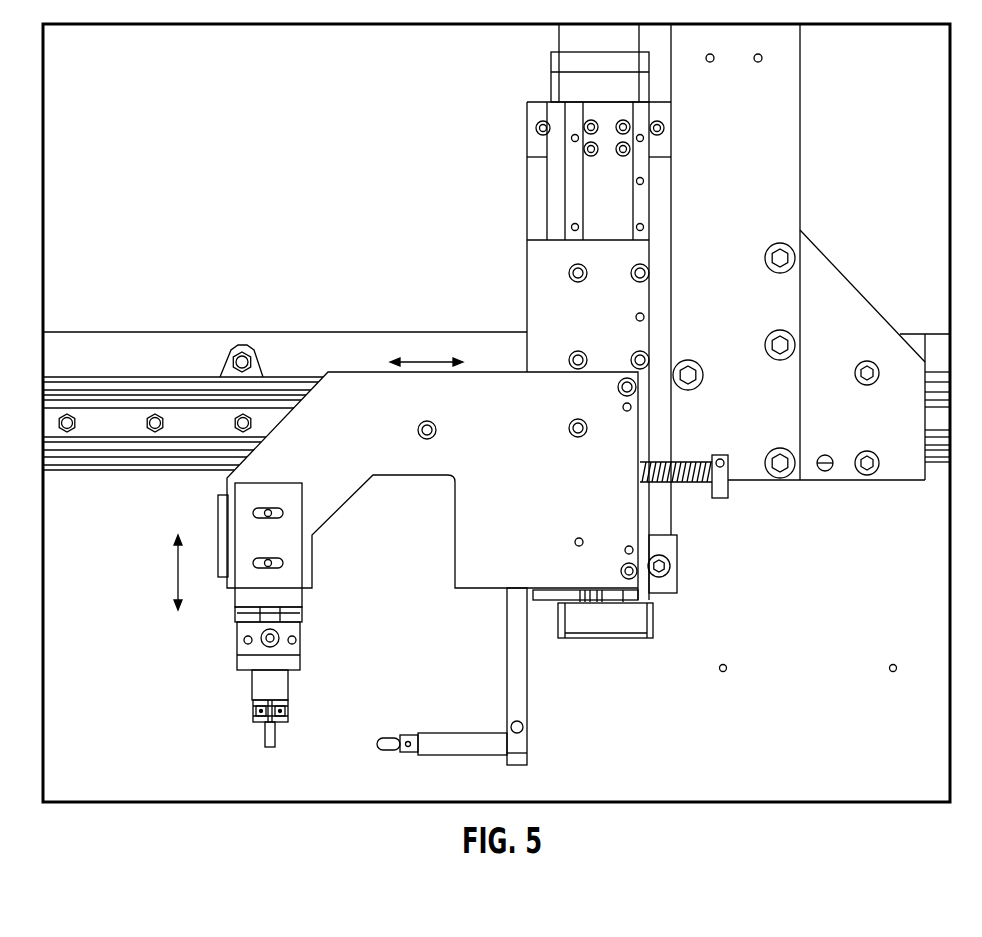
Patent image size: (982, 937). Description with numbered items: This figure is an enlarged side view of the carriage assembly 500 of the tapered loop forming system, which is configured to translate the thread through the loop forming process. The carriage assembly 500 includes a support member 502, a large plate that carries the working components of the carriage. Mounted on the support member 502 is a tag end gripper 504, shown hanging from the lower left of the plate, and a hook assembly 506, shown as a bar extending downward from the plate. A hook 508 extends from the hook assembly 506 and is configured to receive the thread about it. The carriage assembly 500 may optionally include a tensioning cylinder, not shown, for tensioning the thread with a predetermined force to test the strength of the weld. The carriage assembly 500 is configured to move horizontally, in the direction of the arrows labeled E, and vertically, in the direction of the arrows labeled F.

The carriage assembly 500 is at (412, 270).
The support member 502 is at (534, 457).
The tag end gripper 504 is at (241, 681).
The hook assembly 506 is at (545, 725).
The hook 508 is at (377, 744).